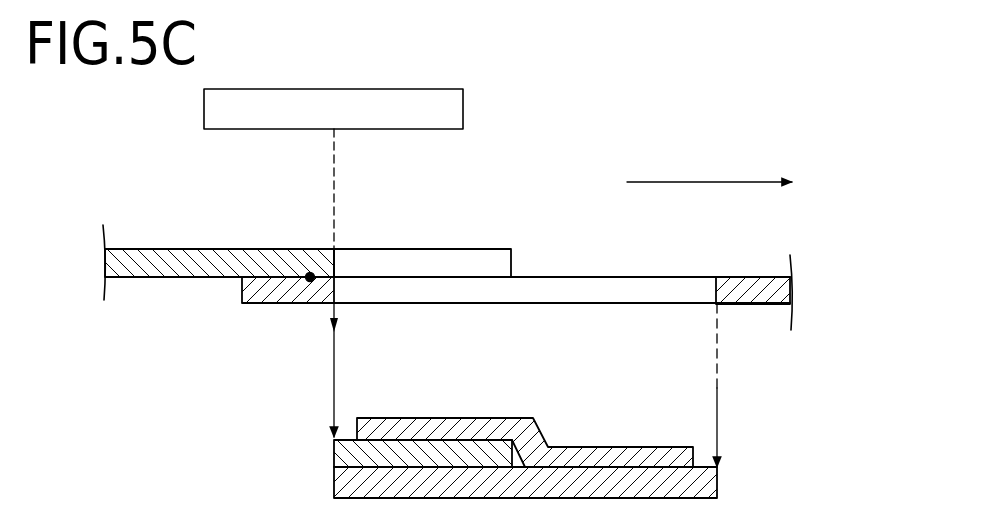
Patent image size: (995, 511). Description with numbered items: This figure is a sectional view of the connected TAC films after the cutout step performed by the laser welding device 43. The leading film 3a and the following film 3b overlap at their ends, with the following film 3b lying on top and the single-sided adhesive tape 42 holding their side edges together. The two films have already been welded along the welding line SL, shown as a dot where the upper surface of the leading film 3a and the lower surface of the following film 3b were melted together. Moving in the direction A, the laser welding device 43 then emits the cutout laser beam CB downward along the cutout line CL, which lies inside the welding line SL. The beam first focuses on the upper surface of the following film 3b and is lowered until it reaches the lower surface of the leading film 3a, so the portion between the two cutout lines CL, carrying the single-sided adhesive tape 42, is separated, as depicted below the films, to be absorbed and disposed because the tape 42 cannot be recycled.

The laser welding device 43 is at (334, 89).
The single-sided adhesive tape 42 is at (474, 432).
The leading film 3a is at (750, 295).
The following film 3b is at (170, 268).
The welding line SL is at (310, 277).
The cutout line CL is at (334, 249).
The cutout laser beam CB is at (334, 163).
The moving direction A is at (696, 182).